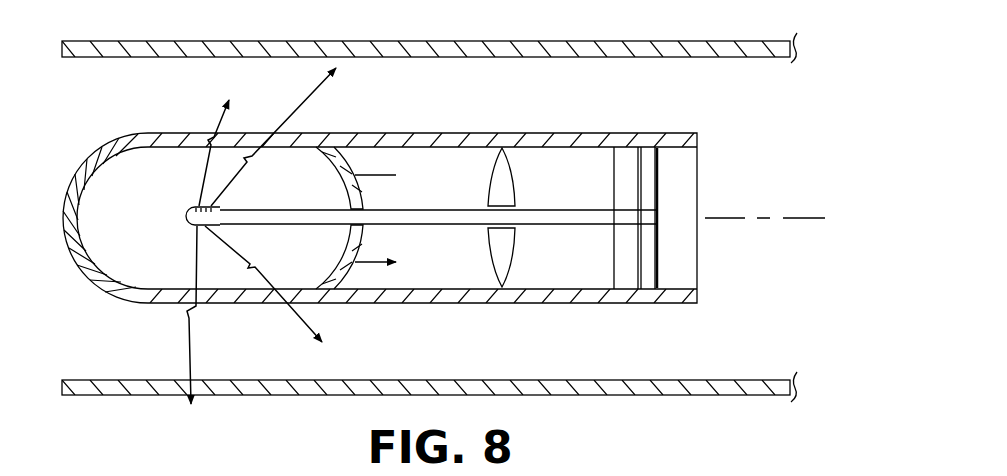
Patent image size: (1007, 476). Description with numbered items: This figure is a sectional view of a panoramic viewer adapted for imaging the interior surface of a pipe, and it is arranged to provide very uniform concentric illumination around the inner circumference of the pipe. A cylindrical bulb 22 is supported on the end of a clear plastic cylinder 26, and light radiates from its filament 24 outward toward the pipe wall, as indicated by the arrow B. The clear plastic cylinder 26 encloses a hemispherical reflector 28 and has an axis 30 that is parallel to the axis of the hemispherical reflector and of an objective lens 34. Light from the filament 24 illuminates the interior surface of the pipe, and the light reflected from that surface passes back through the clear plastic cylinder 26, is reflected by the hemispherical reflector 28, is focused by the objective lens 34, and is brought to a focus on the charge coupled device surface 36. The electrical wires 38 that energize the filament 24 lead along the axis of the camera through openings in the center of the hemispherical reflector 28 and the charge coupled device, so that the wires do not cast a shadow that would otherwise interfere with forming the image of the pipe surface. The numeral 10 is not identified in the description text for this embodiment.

The blood vessel wall 10 is at (384, 37).
The cylindrical bulb 22 is at (152, 131).
The filament 24 is at (207, 205).
The clear plastic cylinder 26 is at (336, 304).
The hemispherical reflector 28 is at (350, 163).
The axis 30 is at (800, 218).
The objective lens 34 is at (500, 176).
The charge coupled device surface 36 is at (622, 160).
The electrical wires 38 is at (442, 209).
The arrow B is at (303, 118).